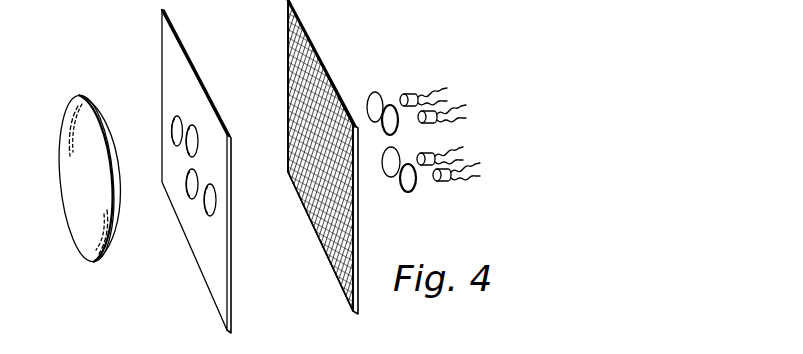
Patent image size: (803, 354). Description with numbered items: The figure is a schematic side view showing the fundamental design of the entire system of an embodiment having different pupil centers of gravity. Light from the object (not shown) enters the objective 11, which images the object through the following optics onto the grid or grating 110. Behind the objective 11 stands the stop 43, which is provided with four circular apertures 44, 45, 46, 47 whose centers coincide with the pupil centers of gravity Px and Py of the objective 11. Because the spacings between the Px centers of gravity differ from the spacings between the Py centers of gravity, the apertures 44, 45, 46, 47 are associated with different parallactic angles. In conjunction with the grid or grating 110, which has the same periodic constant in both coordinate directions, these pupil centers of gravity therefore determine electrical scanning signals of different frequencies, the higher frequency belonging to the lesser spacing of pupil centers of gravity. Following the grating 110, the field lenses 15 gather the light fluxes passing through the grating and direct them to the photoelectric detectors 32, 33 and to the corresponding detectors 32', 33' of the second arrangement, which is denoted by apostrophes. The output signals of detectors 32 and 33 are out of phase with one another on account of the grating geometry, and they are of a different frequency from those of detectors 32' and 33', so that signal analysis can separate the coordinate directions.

The objective 11 is at (88, 228).
The field lenses 15 is at (375, 128).
The photoelectric detector 32 is at (455, 193).
The photoelectric detector 32' is at (465, 149).
The photoelectric detector 33 is at (421, 82).
The photoelectric detector 33' is at (459, 111).
The stop 43 is at (210, 263).
The aperture 44 is at (173, 132).
The aperture 45 is at (195, 136).
The aperture 46 is at (213, 203).
The aperture 47 is at (188, 196).
The grid or grating 110 is at (330, 248).